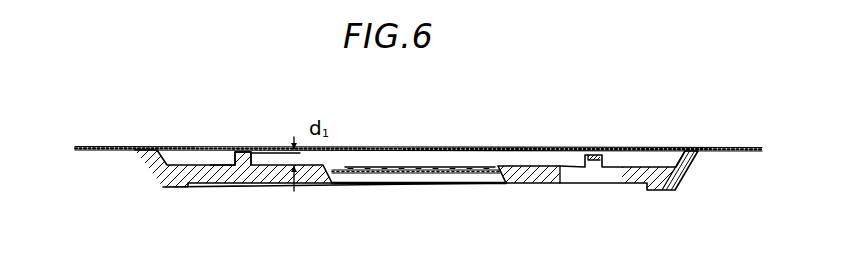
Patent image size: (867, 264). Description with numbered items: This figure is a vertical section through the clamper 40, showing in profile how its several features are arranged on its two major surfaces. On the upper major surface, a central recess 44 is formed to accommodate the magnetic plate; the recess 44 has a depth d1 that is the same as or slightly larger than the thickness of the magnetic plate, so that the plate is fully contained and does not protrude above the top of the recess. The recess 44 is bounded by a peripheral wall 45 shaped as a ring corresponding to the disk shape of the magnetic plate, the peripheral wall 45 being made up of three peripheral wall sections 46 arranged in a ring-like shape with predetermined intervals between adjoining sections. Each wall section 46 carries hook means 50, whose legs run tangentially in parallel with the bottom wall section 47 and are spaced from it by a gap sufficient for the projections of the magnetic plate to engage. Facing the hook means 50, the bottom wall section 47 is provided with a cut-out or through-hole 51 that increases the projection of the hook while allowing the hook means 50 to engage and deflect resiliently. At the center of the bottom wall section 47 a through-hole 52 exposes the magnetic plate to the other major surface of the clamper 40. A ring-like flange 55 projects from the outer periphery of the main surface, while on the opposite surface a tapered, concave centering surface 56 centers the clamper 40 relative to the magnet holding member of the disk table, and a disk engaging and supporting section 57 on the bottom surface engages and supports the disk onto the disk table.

The clamper 40 is at (150, 172).
The recess 44 is at (256, 157).
The peripheral wall 45 is at (233, 161).
The peripheral wall sections 46 is at (245, 153).
The bottom wall section 47 is at (355, 168).
The hook means 50 is at (594, 169).
The cut-out or through-hole 51 is at (615, 172).
The through-hole 52 is at (450, 166).
The ring-like flange 55 is at (78, 146).
The tapered concave centering surface 56 is at (500, 176).
The disk engaging and supporting section 57 is at (660, 190).